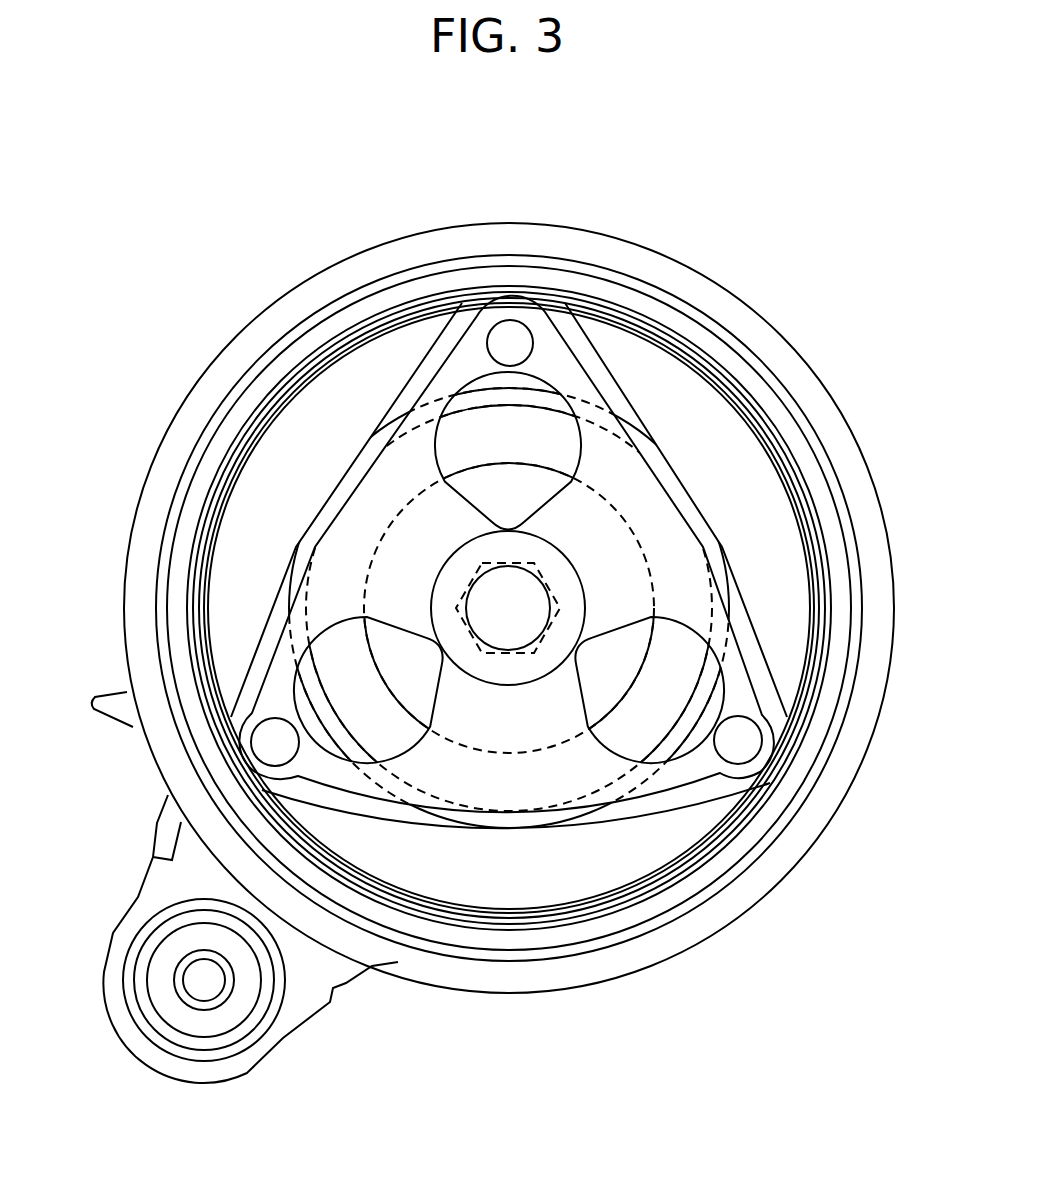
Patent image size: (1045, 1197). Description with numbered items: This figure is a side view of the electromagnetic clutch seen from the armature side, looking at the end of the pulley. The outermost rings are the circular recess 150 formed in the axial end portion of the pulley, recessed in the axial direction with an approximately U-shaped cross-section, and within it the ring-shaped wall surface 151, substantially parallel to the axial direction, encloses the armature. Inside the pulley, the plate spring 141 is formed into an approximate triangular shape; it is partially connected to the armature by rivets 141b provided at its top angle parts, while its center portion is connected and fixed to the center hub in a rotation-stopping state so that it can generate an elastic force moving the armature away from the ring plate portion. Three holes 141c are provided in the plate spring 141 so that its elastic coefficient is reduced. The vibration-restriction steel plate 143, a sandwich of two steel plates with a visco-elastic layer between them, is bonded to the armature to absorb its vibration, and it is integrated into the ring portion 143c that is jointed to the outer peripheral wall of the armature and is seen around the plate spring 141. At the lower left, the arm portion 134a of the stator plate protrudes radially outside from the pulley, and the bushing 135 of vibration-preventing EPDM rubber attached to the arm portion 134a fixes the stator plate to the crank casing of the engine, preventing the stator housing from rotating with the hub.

The arm portion 134a is at (323, 1023).
The bushing 135 is at (212, 1023).
The plate spring 141 is at (647, 497).
The rivets 141b is at (508, 340).
The holes 141c is at (477, 430).
The vibration-restriction steel plate 143 is at (733, 470).
The ring portion 143c is at (568, 300).
The circular recess 150 is at (449, 268).
The wall surface 151 is at (407, 283).